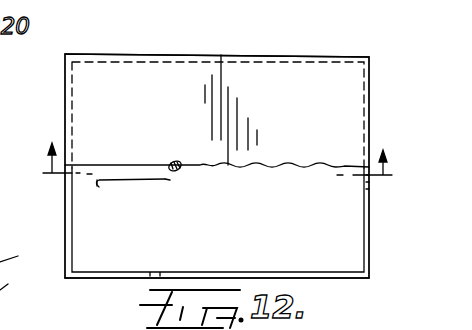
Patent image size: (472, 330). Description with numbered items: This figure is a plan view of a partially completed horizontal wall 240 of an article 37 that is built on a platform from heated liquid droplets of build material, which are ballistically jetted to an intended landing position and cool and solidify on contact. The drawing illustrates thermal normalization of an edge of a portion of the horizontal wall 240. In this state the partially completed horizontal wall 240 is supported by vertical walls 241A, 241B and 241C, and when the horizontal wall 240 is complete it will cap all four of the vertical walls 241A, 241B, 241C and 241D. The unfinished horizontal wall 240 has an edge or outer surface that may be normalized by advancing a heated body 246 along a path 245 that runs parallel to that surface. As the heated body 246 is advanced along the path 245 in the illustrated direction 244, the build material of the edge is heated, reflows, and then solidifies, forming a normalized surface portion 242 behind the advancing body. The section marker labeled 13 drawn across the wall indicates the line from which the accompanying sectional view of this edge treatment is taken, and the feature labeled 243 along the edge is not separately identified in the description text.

The article 37 is at (388, 60).
The horizontal wall 240 is at (330, 98).
The vertical wall 241A is at (370, 115).
The vertical wall 241B is at (214, 55).
The vertical wall 241C is at (65, 123).
The vertical wall 241D is at (349, 279).
The normalized surface portion 242 is at (119, 166).
The wavy conductor line 243 is at (262, 167).
The direction 244 is at (167, 181).
The path 245 is at (97, 186).
The heated body 246 is at (181, 168).
The section line 13- 13 is at (208, 175).